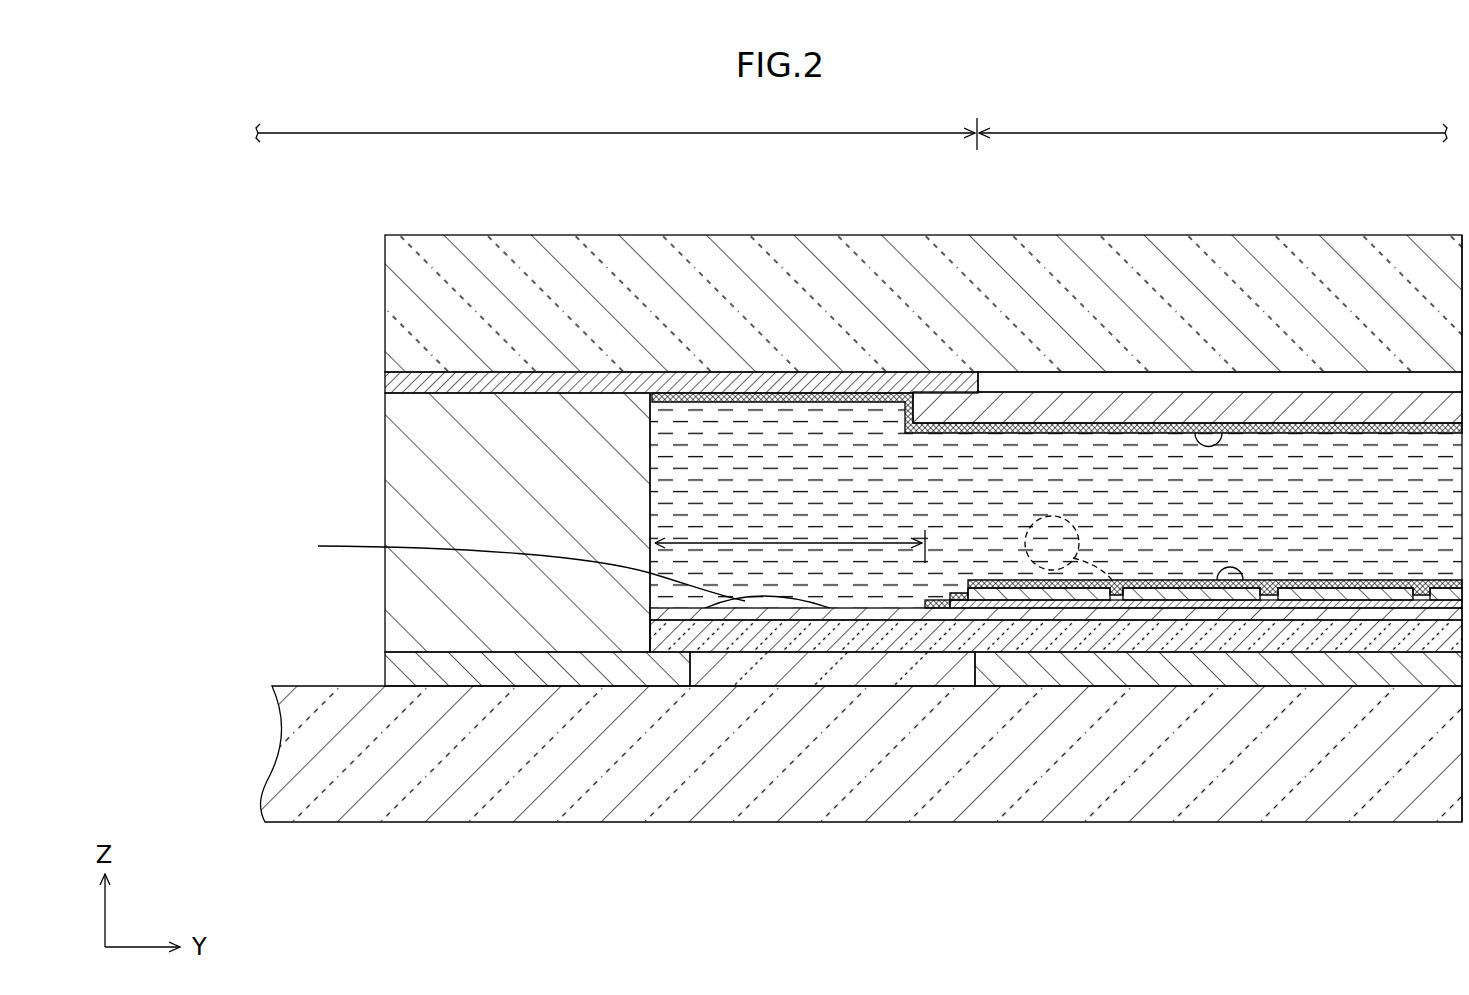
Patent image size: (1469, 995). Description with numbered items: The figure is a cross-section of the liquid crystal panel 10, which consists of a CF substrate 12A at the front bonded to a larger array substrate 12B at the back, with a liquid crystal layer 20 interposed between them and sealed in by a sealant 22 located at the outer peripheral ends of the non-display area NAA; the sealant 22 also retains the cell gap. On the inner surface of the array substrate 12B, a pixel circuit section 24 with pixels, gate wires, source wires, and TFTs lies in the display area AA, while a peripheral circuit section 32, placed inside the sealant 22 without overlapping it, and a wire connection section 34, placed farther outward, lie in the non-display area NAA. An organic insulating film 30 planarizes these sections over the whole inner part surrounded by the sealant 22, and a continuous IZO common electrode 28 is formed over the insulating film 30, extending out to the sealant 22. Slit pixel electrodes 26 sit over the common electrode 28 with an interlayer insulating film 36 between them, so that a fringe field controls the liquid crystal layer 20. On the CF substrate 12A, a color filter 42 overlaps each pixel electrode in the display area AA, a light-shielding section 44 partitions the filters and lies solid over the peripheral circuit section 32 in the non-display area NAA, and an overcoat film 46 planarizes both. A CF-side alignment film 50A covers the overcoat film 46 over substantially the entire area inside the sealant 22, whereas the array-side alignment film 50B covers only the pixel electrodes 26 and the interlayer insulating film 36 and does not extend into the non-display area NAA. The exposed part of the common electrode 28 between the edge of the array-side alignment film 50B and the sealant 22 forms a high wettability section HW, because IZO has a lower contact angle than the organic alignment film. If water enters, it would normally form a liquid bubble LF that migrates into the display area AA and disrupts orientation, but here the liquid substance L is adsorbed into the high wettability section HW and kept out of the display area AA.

The liquid crystal panel 10 is at (232, 266).
The CF substrate 12A is at (478, 268).
The array substrate 12B is at (300, 828).
The liquid crystal layer 20 is at (1375, 457).
The sealant 22 is at (408, 468).
The pixel circuit section 24 is at (1413, 677).
The pixel electrodes 26 is at (1030, 594).
The common electrode 28 is at (835, 614).
The insulating film 30 is at (918, 637).
The peripheral circuit section 32 is at (760, 668).
The wire connection section 34 is at (595, 680).
The interlayer insulating film 36 is at (986, 606).
The color filter 42 is at (1026, 383).
The light-shielding section 44 is at (820, 380).
The overcoat film 46 is at (1095, 405).
The CF-side alignment film 50A is at (1210, 432).
The array-side alignment film 50B is at (1232, 590).
The liquid substance L is at (560, 567).
The liquid bubble LF is at (1120, 598).
The high wettability section HW is at (790, 537).
The non-display area NAA is at (615, 120).
The display area AA is at (1213, 120).